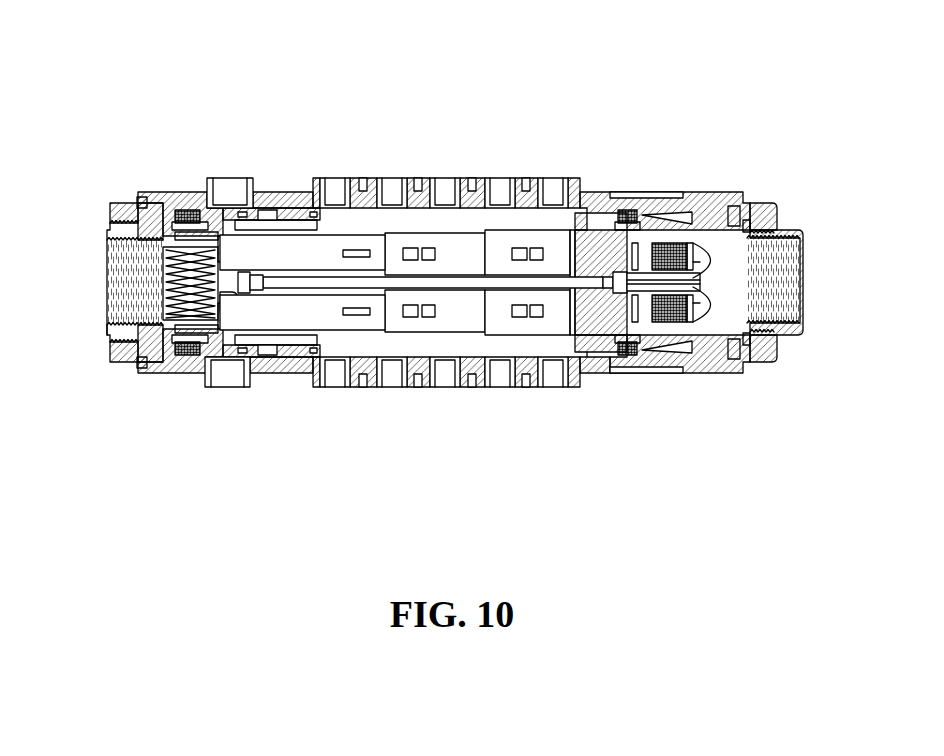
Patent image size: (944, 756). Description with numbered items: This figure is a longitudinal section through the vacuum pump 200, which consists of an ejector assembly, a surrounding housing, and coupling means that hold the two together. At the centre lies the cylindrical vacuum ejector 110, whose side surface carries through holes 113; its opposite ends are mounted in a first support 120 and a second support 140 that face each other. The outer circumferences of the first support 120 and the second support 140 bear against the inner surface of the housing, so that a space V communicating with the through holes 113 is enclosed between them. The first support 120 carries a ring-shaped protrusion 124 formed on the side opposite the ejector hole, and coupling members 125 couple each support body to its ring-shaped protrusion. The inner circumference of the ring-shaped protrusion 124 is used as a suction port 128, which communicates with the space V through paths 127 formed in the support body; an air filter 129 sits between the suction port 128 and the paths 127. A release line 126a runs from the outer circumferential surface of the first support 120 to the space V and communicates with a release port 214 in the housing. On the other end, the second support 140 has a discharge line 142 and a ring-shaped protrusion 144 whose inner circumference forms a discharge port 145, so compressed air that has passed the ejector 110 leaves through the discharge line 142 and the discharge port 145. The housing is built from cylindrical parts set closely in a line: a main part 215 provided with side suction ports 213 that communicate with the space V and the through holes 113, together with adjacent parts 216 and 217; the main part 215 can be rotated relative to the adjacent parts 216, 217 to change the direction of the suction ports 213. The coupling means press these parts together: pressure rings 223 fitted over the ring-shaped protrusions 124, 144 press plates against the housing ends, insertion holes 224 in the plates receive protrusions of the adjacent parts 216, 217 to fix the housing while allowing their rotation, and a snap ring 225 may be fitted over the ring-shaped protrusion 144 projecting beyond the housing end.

The pump 200 is at (505, 78).
The vacuum ejector 110 is at (444, 340).
The through holes 113 is at (432, 248).
The first support 120 is at (258, 361).
The ring-shaped protrusion 124 is at (96, 232).
The coupling members 125 is at (188, 211).
The release line 126a is at (268, 210).
The paths 127 is at (259, 261).
The suction port 128 is at (105, 320).
The air filter 129 is at (163, 286).
The second support 140 is at (706, 212).
The discharge line 142 is at (711, 291).
The ring-shaped protrusion 144 is at (792, 230).
The discharge port 145 is at (802, 325).
The side suction ports 213 is at (333, 190).
The release port 214 is at (222, 186).
The main part 215 is at (587, 378).
The adjacent part 216 is at (182, 376).
The adjacent part 217 is at (708, 376).
The pressure rings 223 is at (772, 204).
The insertion holes 224 is at (143, 200).
The snap ring 225 is at (752, 350).
The space V is at (390, 222).